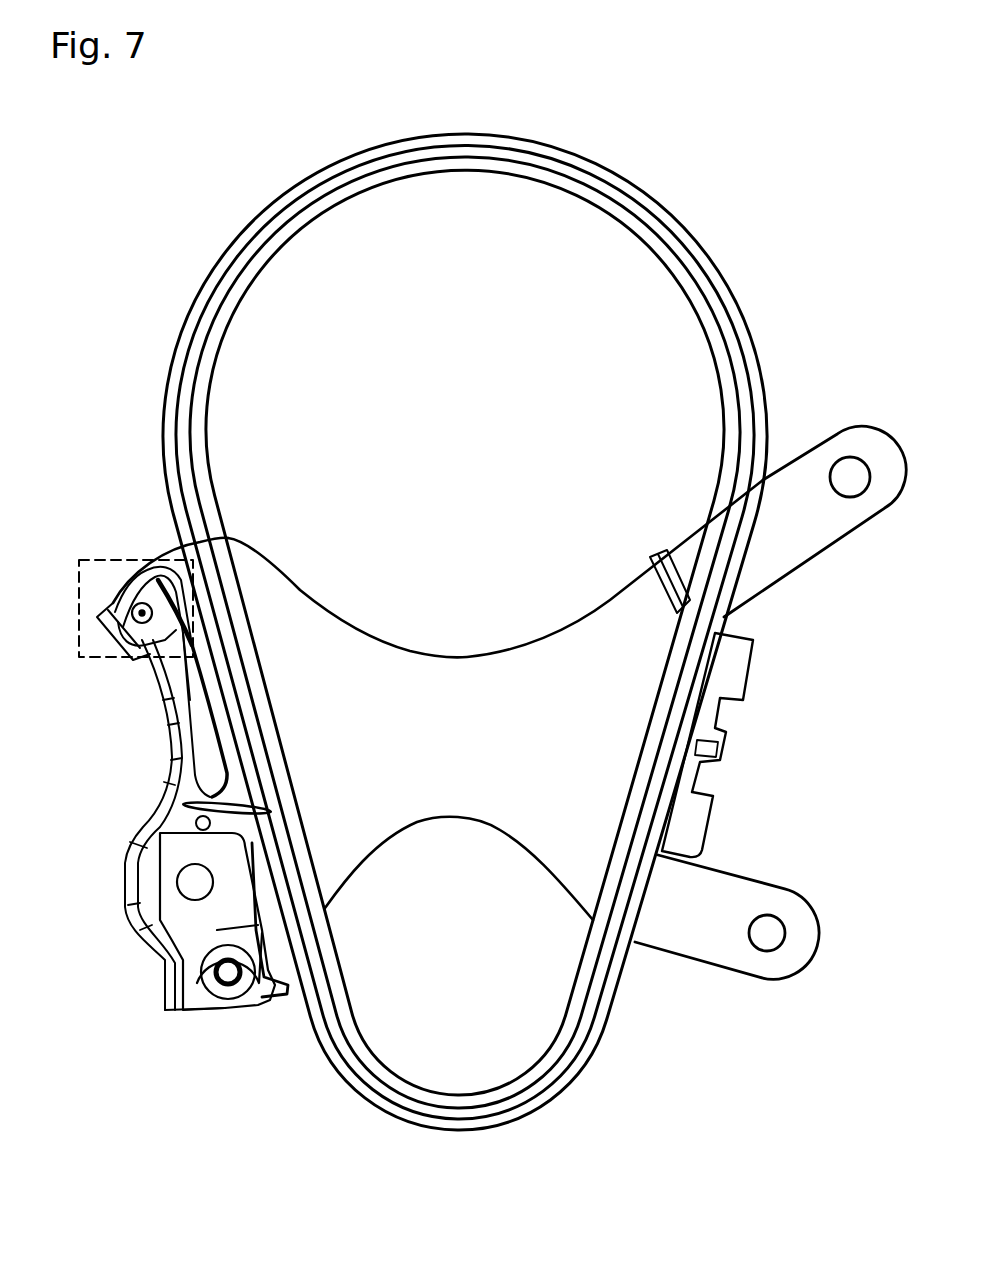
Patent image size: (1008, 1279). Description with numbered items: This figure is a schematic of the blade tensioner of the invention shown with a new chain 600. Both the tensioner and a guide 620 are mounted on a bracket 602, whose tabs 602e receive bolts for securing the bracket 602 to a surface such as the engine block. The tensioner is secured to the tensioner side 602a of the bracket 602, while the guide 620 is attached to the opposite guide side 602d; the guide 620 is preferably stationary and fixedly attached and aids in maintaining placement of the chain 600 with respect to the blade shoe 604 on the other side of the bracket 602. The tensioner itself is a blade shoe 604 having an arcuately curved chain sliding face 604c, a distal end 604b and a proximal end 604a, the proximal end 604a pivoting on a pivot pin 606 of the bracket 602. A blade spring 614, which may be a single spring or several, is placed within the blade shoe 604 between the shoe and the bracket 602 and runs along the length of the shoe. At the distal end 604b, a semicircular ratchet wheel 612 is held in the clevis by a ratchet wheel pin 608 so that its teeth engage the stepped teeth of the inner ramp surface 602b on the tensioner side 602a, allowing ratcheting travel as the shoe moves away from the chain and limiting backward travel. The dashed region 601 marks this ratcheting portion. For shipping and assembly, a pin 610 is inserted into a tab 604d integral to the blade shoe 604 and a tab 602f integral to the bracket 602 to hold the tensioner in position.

The chain 600 is at (625, 180).
The detail region 601 is at (79, 560).
The bracket 602 is at (397, 648).
The tensioner side 602a is at (180, 557).
The inner ramp surface 602b is at (105, 625).
The guide side 602d is at (643, 602).
The tabs 602e is at (817, 447).
The tab 602f is at (158, 803).
The blade shoe 604 is at (262, 878).
The proximal end 604a is at (287, 993).
The distal end 604b is at (152, 587).
The chain sliding face 604c is at (243, 768).
The tab 604d is at (245, 828).
The pivot pin 606 is at (228, 972).
The ratchet wheel pin 608 is at (140, 618).
The pin 610 is at (210, 792).
The ratchet wheel 612 is at (145, 643).
The blade spring 614 is at (203, 688).
The guide 620 is at (688, 830).